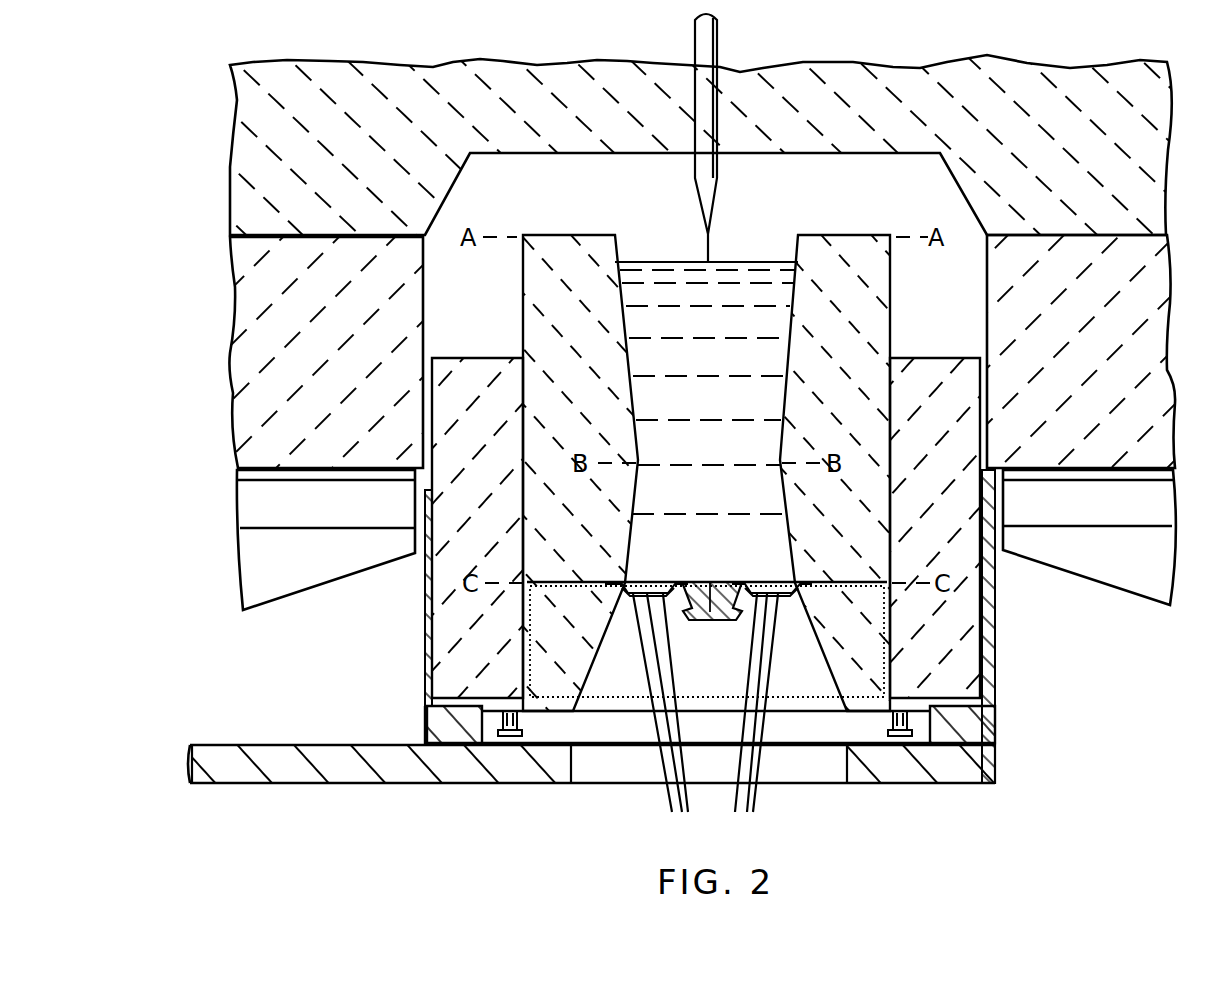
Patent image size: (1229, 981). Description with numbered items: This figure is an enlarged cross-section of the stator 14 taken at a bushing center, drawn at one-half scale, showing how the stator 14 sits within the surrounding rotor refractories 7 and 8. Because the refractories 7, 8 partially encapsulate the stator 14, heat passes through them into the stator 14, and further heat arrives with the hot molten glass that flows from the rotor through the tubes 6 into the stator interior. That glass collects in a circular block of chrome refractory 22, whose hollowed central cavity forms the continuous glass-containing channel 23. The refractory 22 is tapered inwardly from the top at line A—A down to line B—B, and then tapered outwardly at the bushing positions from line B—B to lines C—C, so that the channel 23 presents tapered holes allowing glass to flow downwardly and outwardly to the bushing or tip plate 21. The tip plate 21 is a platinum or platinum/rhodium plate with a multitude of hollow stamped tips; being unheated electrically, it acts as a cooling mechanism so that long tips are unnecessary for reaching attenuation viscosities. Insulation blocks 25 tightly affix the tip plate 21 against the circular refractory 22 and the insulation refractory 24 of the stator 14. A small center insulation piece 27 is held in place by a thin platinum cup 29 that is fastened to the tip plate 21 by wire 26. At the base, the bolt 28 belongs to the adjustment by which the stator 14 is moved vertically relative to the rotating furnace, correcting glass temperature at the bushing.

The tubes 6 is at (697, 40).
The refractory 7 is at (1163, 156).
The refractory 8 is at (243, 316).
The stator 14 is at (1016, 661).
The tip plate 21 is at (797, 604).
The chrome refractory 22 is at (890, 323).
The channel 23 is at (760, 237).
The insulation refractory 24 is at (440, 416).
The insulation blocks 25 is at (840, 661).
The wire 26 is at (695, 585).
The center insulation piece 27 is at (732, 588).
The bolt 28 is at (522, 730).
The platinum cup 29 is at (700, 612).